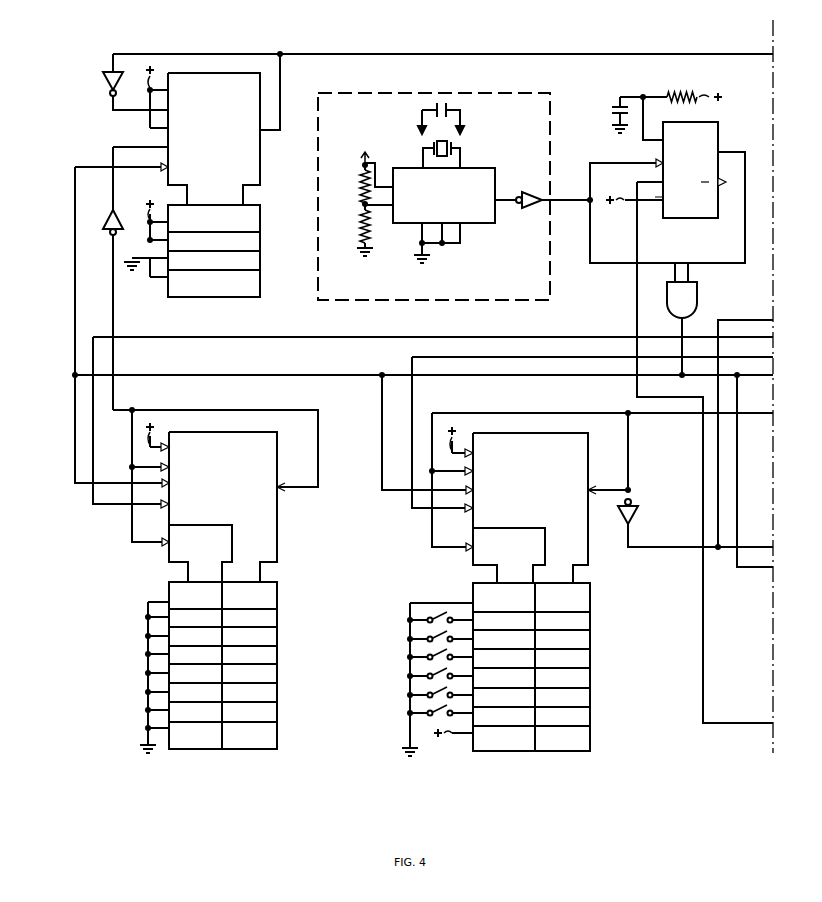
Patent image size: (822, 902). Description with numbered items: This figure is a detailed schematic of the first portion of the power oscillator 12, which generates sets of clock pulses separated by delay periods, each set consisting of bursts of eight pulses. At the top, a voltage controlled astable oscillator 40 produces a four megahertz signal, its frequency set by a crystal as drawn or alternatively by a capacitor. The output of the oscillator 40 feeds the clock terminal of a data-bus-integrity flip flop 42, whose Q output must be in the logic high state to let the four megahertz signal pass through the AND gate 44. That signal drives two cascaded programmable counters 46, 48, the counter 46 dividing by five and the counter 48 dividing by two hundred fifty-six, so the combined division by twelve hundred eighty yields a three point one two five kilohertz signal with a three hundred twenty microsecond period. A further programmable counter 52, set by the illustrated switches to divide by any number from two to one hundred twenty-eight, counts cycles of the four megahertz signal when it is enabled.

The power oscillator 12 is at (411, 413).
The voltage controlled astable oscillator 40 is at (550, 268).
The data-bus-integrity flip flop 42 is at (695, 219).
The AND gate 44 is at (698, 291).
The programmable counter 46 is at (262, 283).
The programmable counter 48 is at (280, 675).
The programmable counter 52 is at (593, 676).